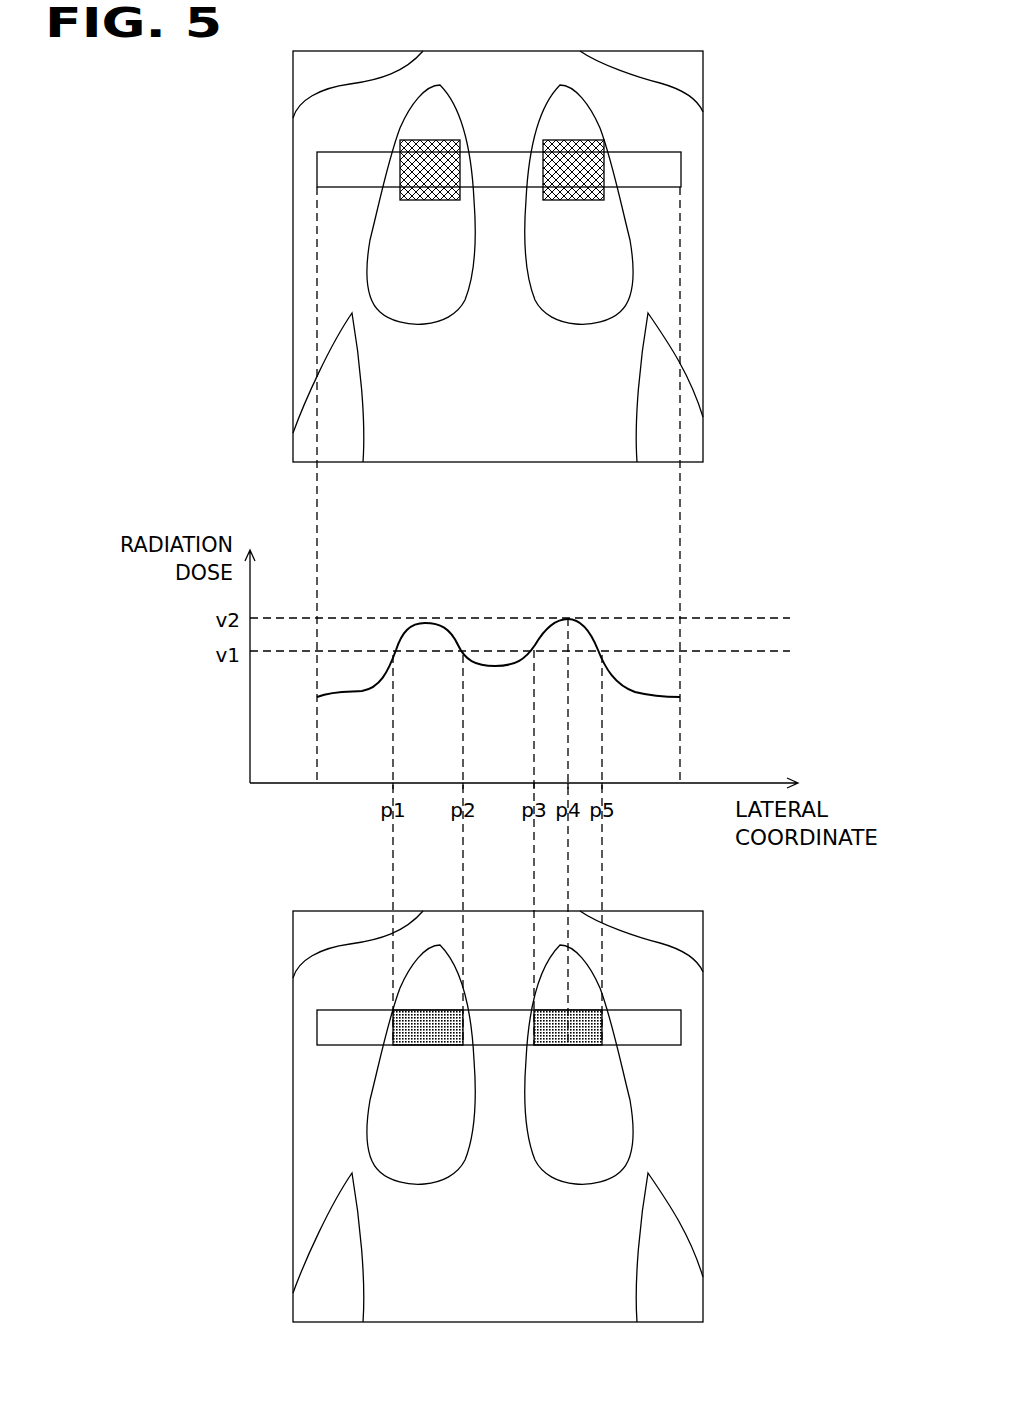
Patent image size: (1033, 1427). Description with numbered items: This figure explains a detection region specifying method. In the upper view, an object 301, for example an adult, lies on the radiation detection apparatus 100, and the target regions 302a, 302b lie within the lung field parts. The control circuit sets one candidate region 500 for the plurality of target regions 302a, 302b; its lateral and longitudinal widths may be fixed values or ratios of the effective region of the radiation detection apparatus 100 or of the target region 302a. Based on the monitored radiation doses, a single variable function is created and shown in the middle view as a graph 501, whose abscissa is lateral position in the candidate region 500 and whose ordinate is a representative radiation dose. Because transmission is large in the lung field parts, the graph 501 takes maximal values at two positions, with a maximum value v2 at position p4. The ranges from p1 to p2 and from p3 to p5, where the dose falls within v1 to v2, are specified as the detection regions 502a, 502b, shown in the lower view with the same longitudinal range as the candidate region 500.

The radiation detection apparatus 100 is at (635, 51).
The object 301 is at (690, 90).
The candidate region 500 is at (681, 168).
The target region 302a is at (425, 140).
The target region 302b is at (570, 140).
The graph 501 is at (600, 640).
The detection region 502a is at (420, 1047).
The detection region 502b is at (600, 1035).